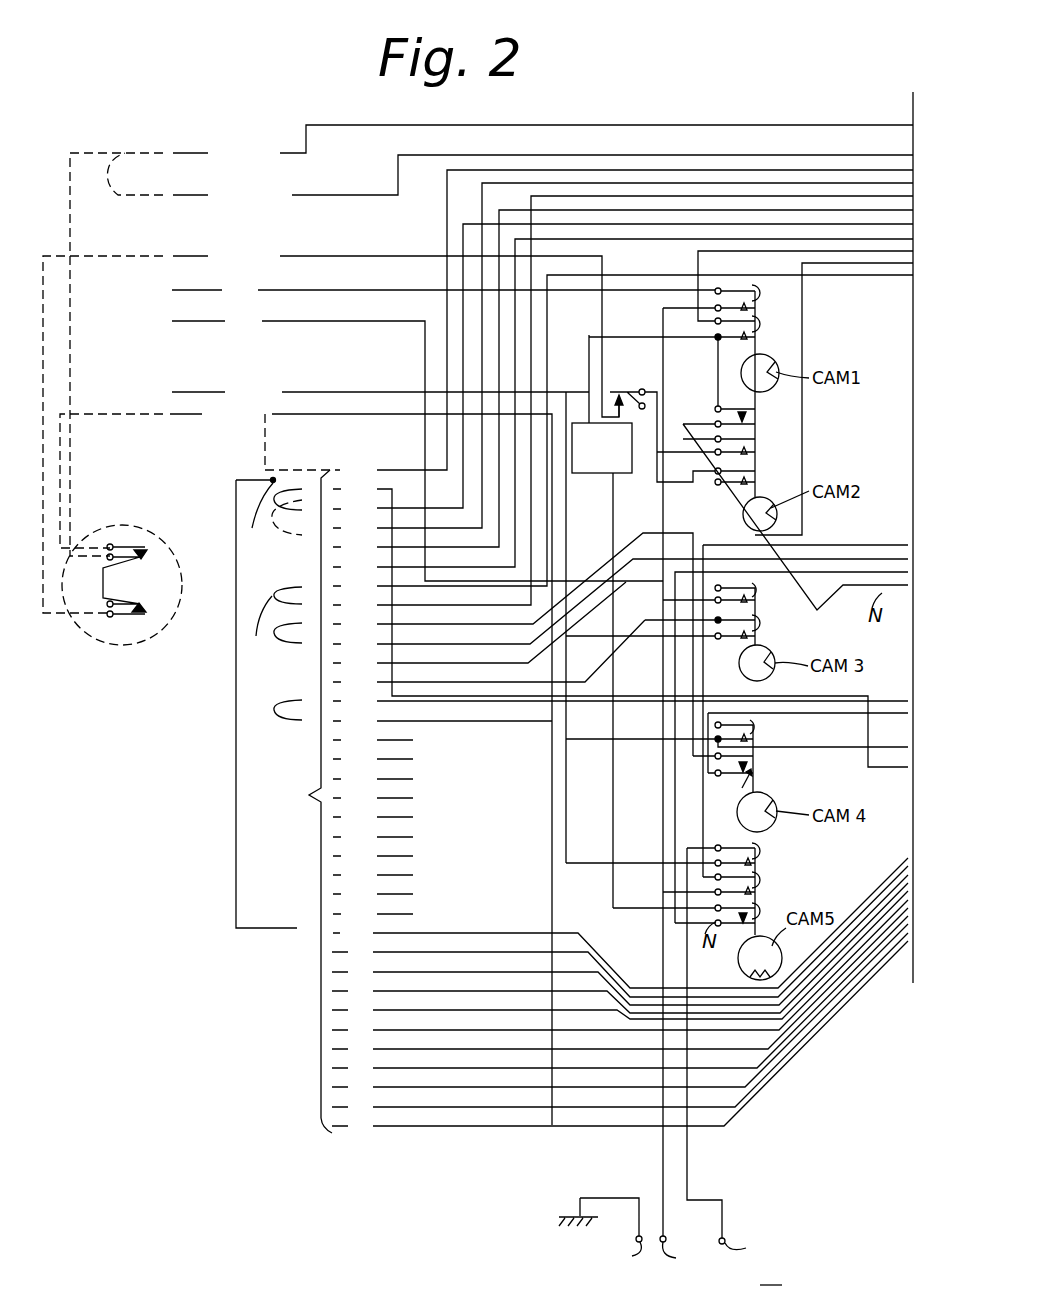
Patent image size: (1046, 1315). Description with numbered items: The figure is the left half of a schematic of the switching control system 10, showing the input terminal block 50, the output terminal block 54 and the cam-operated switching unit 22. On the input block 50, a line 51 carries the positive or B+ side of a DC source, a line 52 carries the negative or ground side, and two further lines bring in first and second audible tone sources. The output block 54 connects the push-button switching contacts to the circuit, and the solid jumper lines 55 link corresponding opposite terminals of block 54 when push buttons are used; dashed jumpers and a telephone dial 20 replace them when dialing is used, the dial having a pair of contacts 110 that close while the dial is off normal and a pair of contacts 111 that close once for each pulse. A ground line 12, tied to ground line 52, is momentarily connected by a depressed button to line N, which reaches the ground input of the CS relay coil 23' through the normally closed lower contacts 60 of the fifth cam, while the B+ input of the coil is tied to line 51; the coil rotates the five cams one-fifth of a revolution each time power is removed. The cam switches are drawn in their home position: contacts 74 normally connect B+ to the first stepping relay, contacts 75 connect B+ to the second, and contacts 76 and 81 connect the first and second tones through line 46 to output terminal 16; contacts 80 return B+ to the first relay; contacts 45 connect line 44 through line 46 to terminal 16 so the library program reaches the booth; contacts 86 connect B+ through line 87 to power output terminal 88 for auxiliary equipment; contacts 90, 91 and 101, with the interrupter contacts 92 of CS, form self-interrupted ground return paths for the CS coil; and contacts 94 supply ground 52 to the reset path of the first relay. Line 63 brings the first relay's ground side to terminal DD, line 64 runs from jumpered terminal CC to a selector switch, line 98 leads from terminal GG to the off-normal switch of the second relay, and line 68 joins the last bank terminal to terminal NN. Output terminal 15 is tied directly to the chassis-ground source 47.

The input terminal block 50 is at (248, 128).
The line 64 is at (462, 241).
The line 63 is at (482, 300).
The line 98 is at (558, 353).
The interrupter contacts 92 is at (645, 388).
The contacts 76 is at (760, 296).
The contacts 75 is at (760, 328).
The normally closed contacts 74 is at (749, 381).
The contacts 101 is at (750, 453).
The contacts 91 is at (756, 476).
The switching unit 22 is at (877, 428).
The line 44 is at (878, 548).
The line 51 is at (326, 391).
The line 52 is at (356, 416).
The jumper lines 55 is at (293, 700).
The output terminal block 54 is at (340, 798).
The contacts 111 is at (148, 556).
The contacts 110 is at (148, 606).
The telephone dial 20 is at (90, 655).
The CS relay coil 23' is at (602, 481).
The contacts 81 is at (760, 590).
The contacts 80 is at (762, 628).
The contacts 94 is at (762, 738).
The ground line 12 is at (788, 750).
The normally closed contacts 90 is at (732, 786).
The contacts 86 is at (760, 852).
The normally open switch contacts 45 is at (760, 882).
The contacts 60 is at (762, 908).
The line 46 is at (672, 927).
The line 68 is at (440, 705).
The line 87 is at (688, 1151).
The power output terminal 88 is at (742, 1235).
The output terminal 15 is at (620, 1251).
The output terminal 16 is at (684, 1251).
The source of reference potential 47 is at (572, 1215).
The apparatus 10 is at (772, 1273).